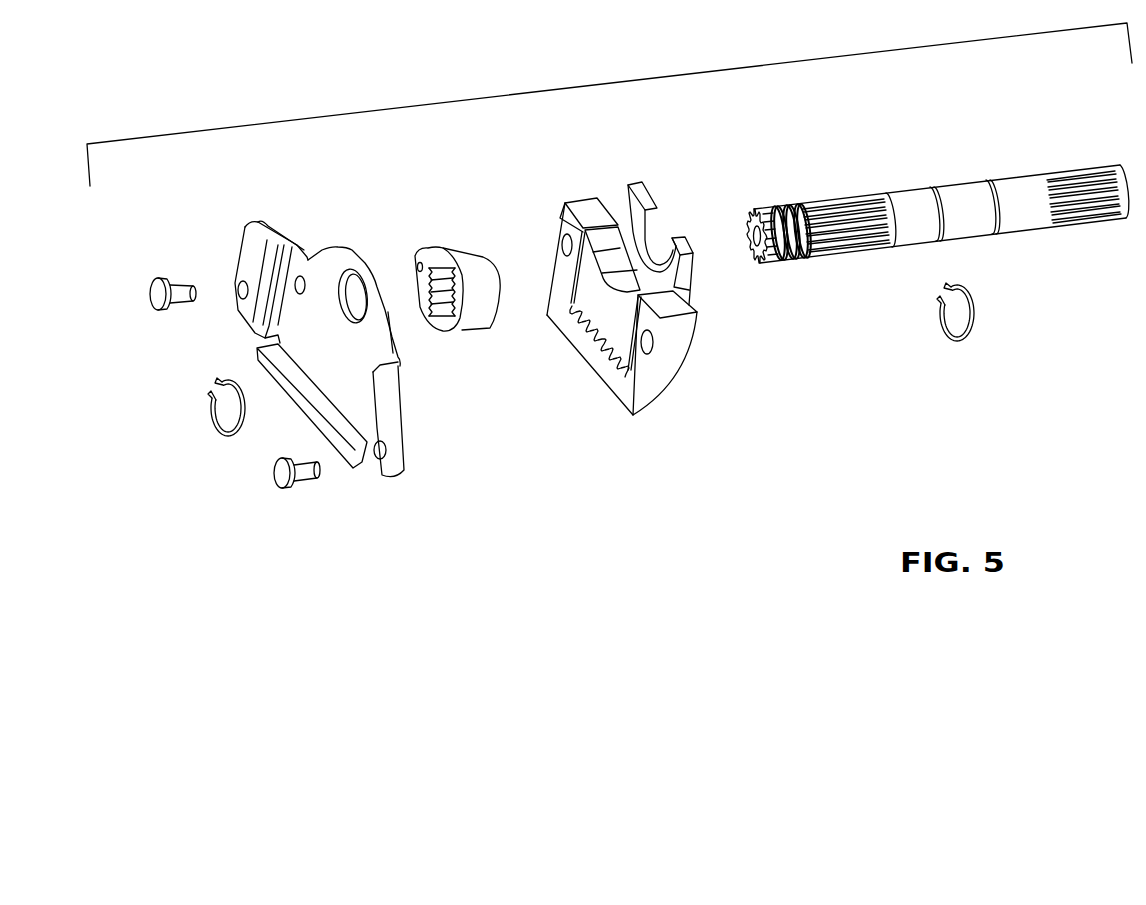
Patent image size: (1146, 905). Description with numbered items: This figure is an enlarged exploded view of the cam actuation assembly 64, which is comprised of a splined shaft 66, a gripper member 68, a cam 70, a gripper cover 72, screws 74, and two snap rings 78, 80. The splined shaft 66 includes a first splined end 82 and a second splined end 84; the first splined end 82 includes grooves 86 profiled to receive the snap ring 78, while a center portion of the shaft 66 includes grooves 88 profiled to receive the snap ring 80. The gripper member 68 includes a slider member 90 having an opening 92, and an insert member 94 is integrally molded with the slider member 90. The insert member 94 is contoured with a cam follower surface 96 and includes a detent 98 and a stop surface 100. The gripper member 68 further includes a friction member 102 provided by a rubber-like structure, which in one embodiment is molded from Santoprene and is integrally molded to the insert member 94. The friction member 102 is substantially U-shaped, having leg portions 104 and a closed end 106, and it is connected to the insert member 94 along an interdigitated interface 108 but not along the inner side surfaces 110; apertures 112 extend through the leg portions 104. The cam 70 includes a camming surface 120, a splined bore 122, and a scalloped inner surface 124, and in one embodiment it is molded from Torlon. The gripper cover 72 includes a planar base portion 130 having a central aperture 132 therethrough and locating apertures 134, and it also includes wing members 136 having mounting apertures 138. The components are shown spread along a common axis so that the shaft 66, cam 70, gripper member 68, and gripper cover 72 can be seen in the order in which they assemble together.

The cam actuation assembly 64 is at (607, 80).
The splined shaft 66 is at (938, 216).
The gripper member 68 is at (639, 306).
The cam 70 is at (445, 277).
The gripper cover 72 is at (306, 363).
The screws 74 is at (180, 288).
The snap ring 78 is at (210, 402).
The snap ring 80 is at (975, 318).
The first splined end 82 is at (829, 198).
The second splined end 84 is at (1079, 168).
The grooves 86 is at (793, 260).
The grooves 88 is at (940, 236).
The slider member 90 is at (690, 268).
The opening 92 is at (653, 225).
The insert member 94 is at (593, 305).
The cam follower surface 96 is at (617, 223).
The detent 98 is at (640, 380).
The stop surface 100 is at (667, 312).
The friction member 102 is at (677, 367).
The leg portions 104 is at (553, 283).
The closed end 106 is at (560, 325).
The interdigitated interface 108 is at (612, 370).
The inner side surfaces 110 is at (560, 207).
The apertures 112 is at (560, 237).
The camming surface 120 is at (415, 265).
The splined bore 122 is at (432, 318).
The scalloped inner surface 124 is at (470, 334).
The planar base portion 130 is at (350, 362).
The central aperture 132 is at (340, 290).
The locating apertures 134 is at (306, 246).
The wing members 136 is at (247, 243).
The mounting apertures 138 is at (237, 282).